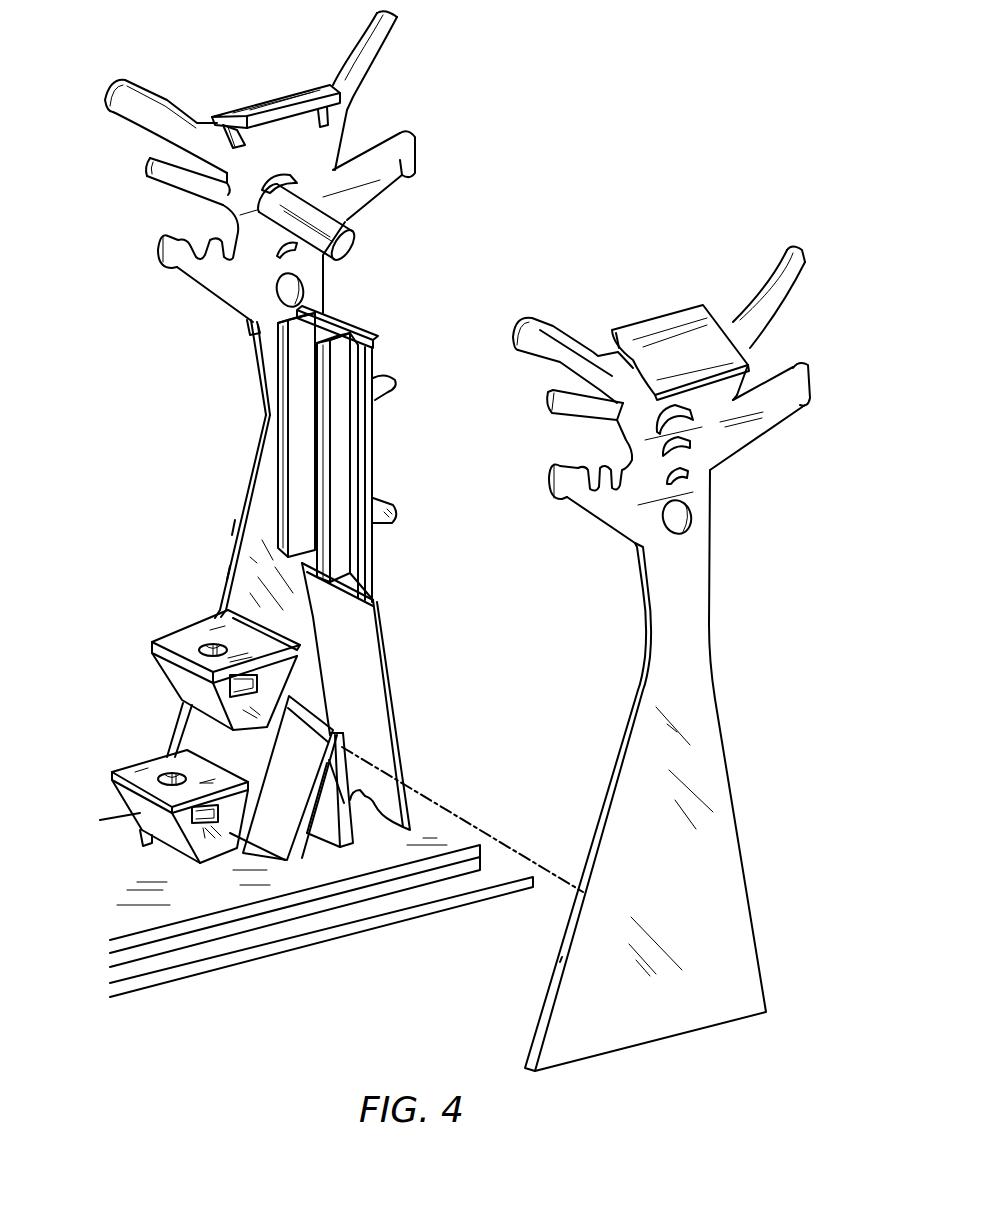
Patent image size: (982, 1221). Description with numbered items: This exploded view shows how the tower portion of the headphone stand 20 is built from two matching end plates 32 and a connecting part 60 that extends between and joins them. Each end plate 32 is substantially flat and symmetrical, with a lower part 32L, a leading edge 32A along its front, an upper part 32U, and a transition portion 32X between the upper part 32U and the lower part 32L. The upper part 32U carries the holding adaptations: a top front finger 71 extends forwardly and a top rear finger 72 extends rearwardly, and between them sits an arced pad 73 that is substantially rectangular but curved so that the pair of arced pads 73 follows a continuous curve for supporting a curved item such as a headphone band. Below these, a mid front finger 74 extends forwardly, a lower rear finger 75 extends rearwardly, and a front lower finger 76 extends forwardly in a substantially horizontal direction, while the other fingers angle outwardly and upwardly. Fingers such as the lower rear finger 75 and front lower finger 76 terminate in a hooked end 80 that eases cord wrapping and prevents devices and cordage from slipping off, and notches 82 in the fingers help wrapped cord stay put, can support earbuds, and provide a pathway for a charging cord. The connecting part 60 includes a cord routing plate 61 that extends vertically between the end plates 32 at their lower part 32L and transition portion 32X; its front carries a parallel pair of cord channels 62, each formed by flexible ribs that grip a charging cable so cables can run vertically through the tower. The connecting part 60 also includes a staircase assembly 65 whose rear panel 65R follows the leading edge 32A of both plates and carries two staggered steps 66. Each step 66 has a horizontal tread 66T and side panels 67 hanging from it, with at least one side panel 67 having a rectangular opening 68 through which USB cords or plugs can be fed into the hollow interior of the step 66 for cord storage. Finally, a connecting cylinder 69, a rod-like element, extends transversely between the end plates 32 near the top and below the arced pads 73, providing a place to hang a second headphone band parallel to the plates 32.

The headphone stand 20 is at (152, 445).
The end plate 32 is at (247, 463).
The upper part 32U is at (326, 283).
The transition portion 32X is at (253, 357).
The leading edge 32A is at (235, 520).
The lower part 32L is at (230, 566).
The connecting part 60 is at (427, 651).
The cord routing plate 61 is at (358, 543).
The cord channels 62 is at (319, 417).
The staircase assembly 65 is at (110, 773).
The rear panel 65R is at (290, 687).
The step 66 is at (132, 762).
The tread 66T is at (183, 627).
The side panel 67 is at (207, 838).
The rectangular opening 68 is at (207, 838).
The connecting cylinder 69 is at (362, 241).
The top front finger 71 is at (143, 86).
The top rear finger 72 is at (383, 57).
The arced pad 73 is at (283, 94).
The mid front finger 74 is at (147, 176).
The lower rear finger 75 is at (388, 192).
The front lower finger 76 is at (197, 283).
The hooked end 80 is at (415, 145).
The notch 82 is at (227, 143).